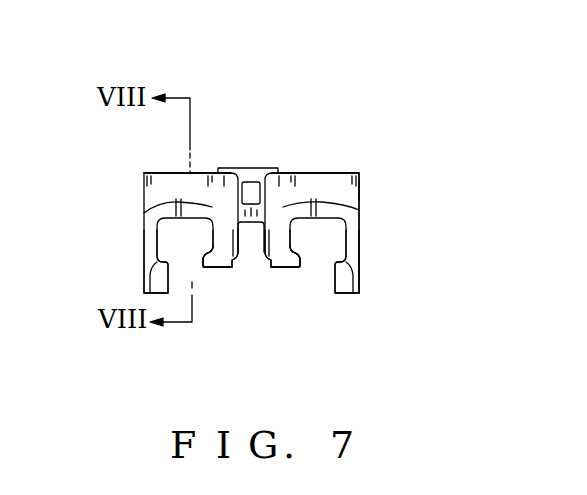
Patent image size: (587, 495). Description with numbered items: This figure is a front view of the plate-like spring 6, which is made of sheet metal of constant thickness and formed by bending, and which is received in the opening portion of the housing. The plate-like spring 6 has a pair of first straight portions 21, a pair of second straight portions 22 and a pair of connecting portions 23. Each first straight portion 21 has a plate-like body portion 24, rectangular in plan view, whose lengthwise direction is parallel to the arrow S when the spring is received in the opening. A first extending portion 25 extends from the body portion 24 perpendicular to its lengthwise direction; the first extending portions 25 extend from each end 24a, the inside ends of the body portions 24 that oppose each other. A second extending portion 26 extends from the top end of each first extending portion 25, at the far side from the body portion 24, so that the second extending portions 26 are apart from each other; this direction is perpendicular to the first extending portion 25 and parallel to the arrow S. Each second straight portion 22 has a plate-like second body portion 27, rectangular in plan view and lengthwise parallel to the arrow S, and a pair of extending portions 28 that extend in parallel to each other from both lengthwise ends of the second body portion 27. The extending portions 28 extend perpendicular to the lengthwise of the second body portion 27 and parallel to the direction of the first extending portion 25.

The plate-like spring 6 is at (374, 184).
The first straight portion 21 is at (194, 174).
The second straight portion 22 is at (224, 168).
The connecting portion 23 is at (360, 237).
The body portion 24 is at (173, 187).
The end 24a is at (144, 213).
The first extending portion 25 is at (222, 270).
The second extending portion 26 is at (218, 272).
The second body portion 27 is at (212, 174).
The extending portion 28 is at (143, 278).